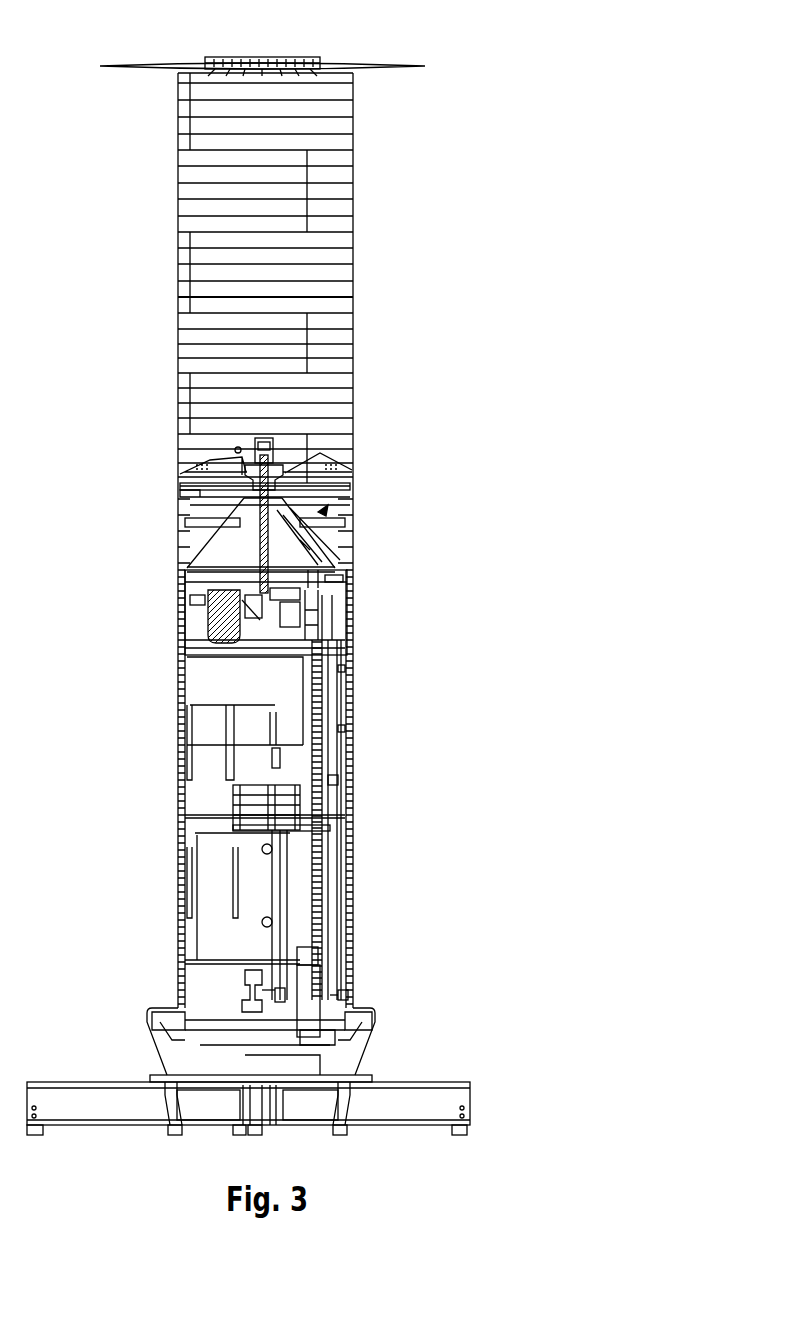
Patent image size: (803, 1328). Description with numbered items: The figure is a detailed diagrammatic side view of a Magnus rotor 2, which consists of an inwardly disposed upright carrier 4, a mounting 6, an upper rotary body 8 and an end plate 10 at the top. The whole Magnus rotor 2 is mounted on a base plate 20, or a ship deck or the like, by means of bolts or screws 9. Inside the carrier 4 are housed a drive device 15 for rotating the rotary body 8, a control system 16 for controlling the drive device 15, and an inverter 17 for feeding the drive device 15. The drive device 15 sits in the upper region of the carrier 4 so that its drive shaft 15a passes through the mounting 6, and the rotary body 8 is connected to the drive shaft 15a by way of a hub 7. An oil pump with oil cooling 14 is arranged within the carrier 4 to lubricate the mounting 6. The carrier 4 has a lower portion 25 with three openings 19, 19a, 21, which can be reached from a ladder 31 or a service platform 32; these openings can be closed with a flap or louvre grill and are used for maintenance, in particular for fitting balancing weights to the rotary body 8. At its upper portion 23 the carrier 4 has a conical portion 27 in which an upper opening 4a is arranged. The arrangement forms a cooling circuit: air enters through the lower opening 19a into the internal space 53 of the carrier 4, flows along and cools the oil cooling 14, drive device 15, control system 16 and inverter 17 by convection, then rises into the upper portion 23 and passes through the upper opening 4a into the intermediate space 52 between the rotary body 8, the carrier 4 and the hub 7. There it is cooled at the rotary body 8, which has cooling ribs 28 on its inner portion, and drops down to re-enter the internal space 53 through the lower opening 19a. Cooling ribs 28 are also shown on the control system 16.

The Magnus rotor 2 is at (78, 273).
The carrier 4 is at (218, 800).
The upper opening 4a is at (195, 538).
The mounting 6 is at (320, 462).
The hub 7 is at (200, 466).
The rotary body 8 is at (328, 247).
The bolts or screws 9 is at (160, 1080).
The end plate 10 is at (380, 70).
The oil pump with oil cooling 14 is at (250, 978).
The drive device 15 is at (212, 610).
The drive shaft 15a is at (340, 530).
The control system 16 is at (340, 990).
The inverter 17 is at (340, 948).
The opening 19 is at (262, 923).
The lower opening 19a is at (348, 996).
The base plate 20 is at (428, 1102).
The opening 21 is at (262, 851).
The upper portion 23 is at (318, 631).
The lower portion 25 is at (383, 893).
The conical portion 27 is at (328, 508).
The cooling ribs 28 is at (338, 296).
The ladder 31 is at (340, 858).
The service platform 32 is at (340, 808).
The intermediate space 52 is at (340, 548).
The internal space 53 is at (215, 683).